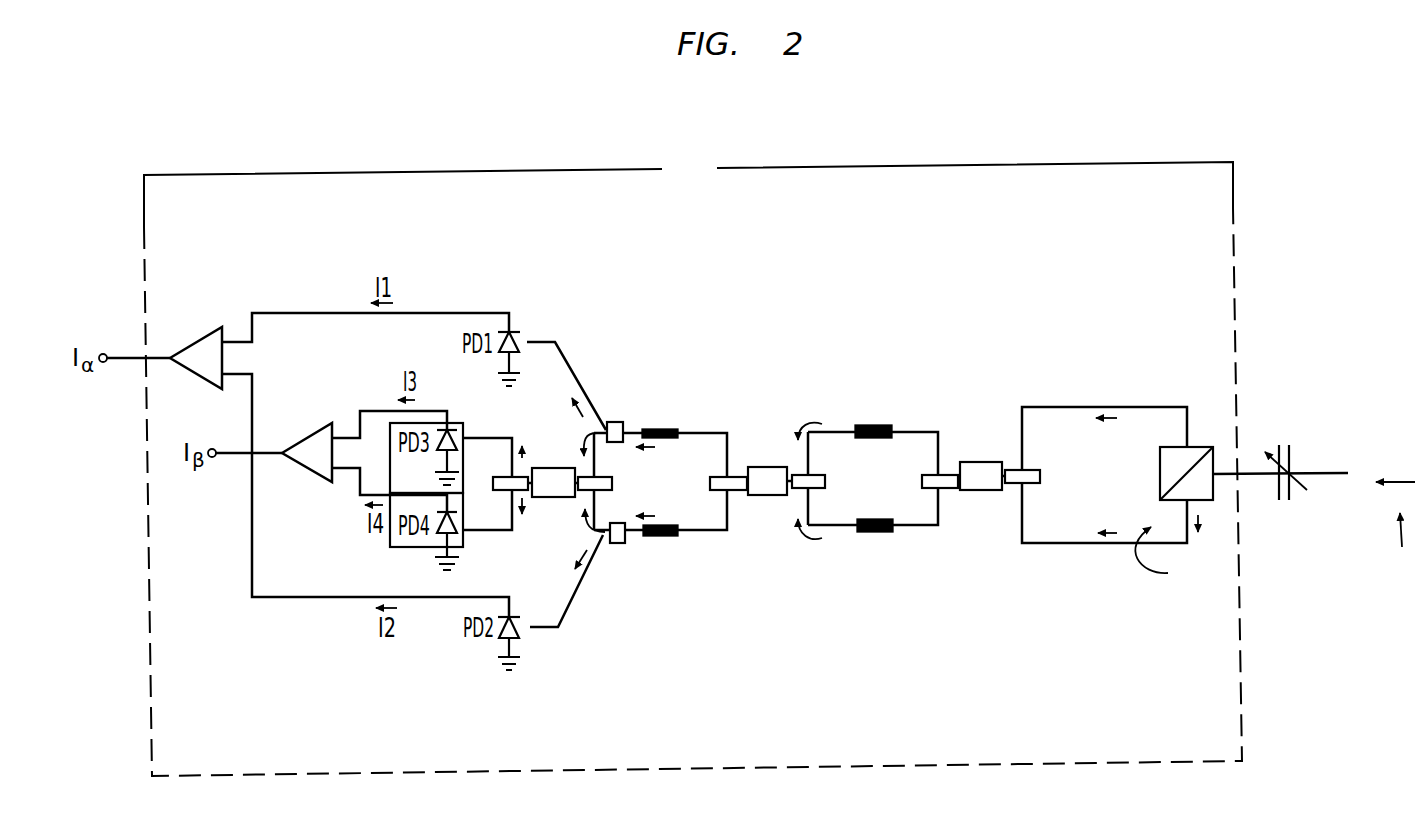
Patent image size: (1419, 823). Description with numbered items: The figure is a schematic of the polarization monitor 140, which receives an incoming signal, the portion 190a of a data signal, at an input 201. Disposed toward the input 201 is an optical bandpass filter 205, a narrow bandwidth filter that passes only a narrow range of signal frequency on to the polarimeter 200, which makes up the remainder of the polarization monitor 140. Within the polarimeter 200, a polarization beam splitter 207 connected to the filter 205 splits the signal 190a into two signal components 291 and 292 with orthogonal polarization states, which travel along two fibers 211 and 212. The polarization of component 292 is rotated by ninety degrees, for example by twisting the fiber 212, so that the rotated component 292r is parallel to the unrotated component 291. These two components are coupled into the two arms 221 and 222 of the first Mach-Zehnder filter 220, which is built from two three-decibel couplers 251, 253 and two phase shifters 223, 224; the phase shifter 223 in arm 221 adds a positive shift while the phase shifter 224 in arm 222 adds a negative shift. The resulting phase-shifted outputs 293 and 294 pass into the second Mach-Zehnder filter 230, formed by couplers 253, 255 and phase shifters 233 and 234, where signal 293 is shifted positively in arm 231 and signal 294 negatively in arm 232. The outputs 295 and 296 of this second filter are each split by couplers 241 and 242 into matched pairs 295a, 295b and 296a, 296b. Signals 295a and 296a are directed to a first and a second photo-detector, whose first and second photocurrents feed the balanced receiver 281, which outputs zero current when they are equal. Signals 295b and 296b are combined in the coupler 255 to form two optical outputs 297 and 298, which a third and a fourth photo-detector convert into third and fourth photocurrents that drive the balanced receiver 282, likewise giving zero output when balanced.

The polarization monitor 140 is at (1354, 119).
The polarimeter 200 is at (708, 184).
The balanced receiver 281 is at (203, 340).
The balanced receiver 282 is at (307, 438).
The optical output 297 is at (492, 442).
The optical output 298 is at (492, 510).
The 3 dB coupler 255 is at (555, 497).
The first optical output signal 295a is at (564, 386).
The third optical output signal 295b is at (570, 437).
The second optical output signal 296a is at (565, 581).
The fourth optical output signal 296b is at (575, 529).
The coupler 241 is at (613, 422).
The coupler 242 is at (617, 543).
The second Mach-Zehnder filter 230 is at (660, 462).
The phase shifter 233 is at (660, 429).
The phase shifter 234 is at (663, 536).
The arm 231 is at (722, 433).
The arm 232 is at (703, 530).
The phase-shifted output signal 295 is at (642, 463).
The phase-shifted output signal 296 is at (642, 500).
The 3 dB coupler 253 is at (768, 495).
The phase-shifted signal output 293 is at (808, 416).
The phase-shifted signal output 294 is at (810, 545).
The first Mach-Zehnder filter 220 is at (865, 460).
The phase shifter 223 is at (872, 425).
The phase shifter 224 is at (875, 533).
The arm 221 is at (915, 432).
The arm 222 is at (915, 525).
The 3 dB coupler 251 is at (982, 490).
The fiber 211 is at (1103, 407).
The fiber 212 is at (1103, 543).
The signal component 291 is at (1103, 434).
The rotated signal component 292r is at (1103, 517).
The signal component 292 is at (1175, 545).
The polarization beam splitter 207 is at (1198, 447).
The optical bandpass filter 205 is at (1284, 500).
The portion of the data signal 190a is at (1395, 465).
The input 201 is at (1403, 547).